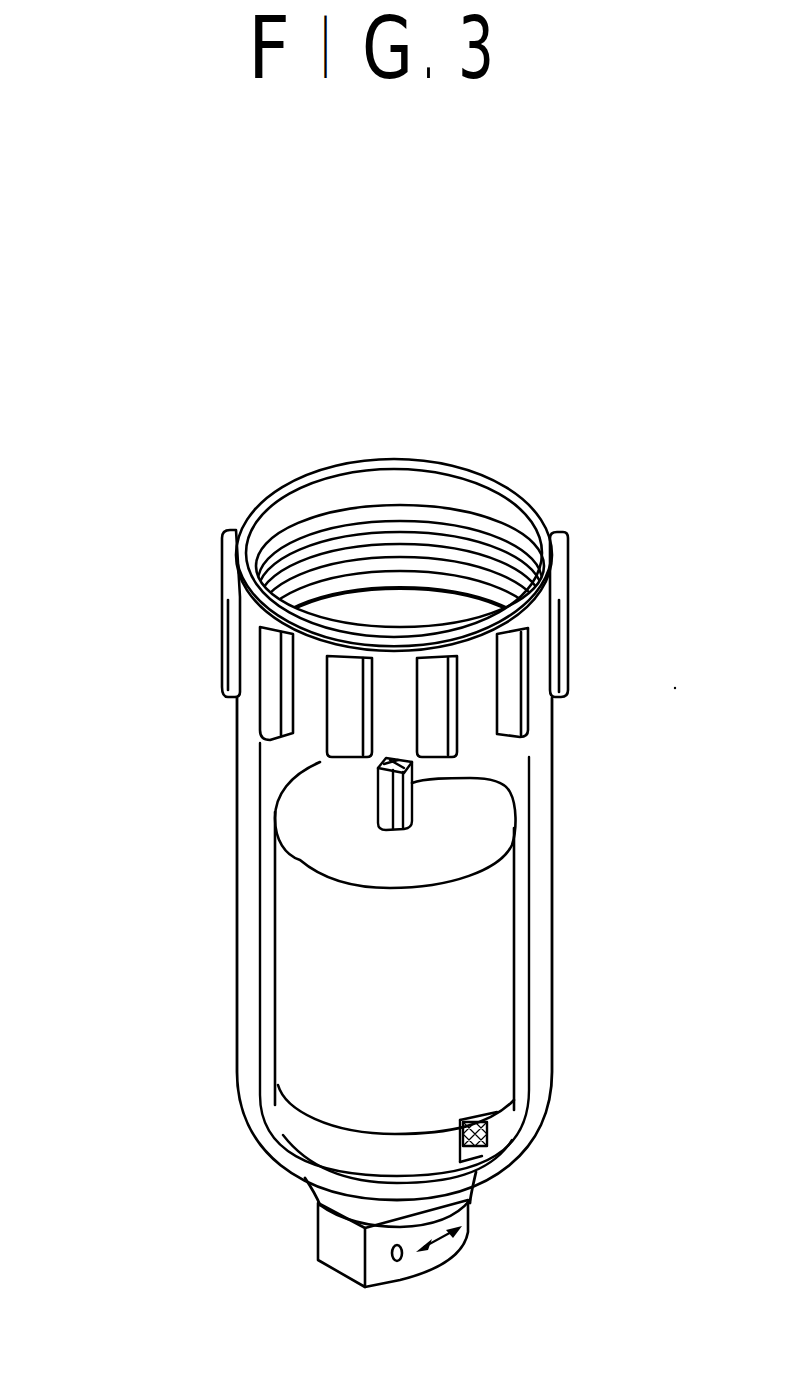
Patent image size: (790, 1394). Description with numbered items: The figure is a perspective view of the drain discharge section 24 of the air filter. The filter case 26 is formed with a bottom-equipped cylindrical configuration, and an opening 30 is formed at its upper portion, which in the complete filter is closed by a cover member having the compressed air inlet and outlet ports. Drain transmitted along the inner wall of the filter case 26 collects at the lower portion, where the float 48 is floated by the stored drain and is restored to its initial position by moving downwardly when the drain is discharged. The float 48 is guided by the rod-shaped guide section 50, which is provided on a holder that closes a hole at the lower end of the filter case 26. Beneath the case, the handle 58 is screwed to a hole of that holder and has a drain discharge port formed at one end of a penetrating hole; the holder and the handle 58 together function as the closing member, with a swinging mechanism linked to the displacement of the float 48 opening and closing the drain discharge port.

The drain discharge section 24 is at (473, 920).
The filter case 26 is at (253, 733).
The opening 30 is at (462, 503).
The float 48 is at (453, 985).
The rod-shaped guide section 50 is at (463, 762).
The handle 58 is at (438, 1260).